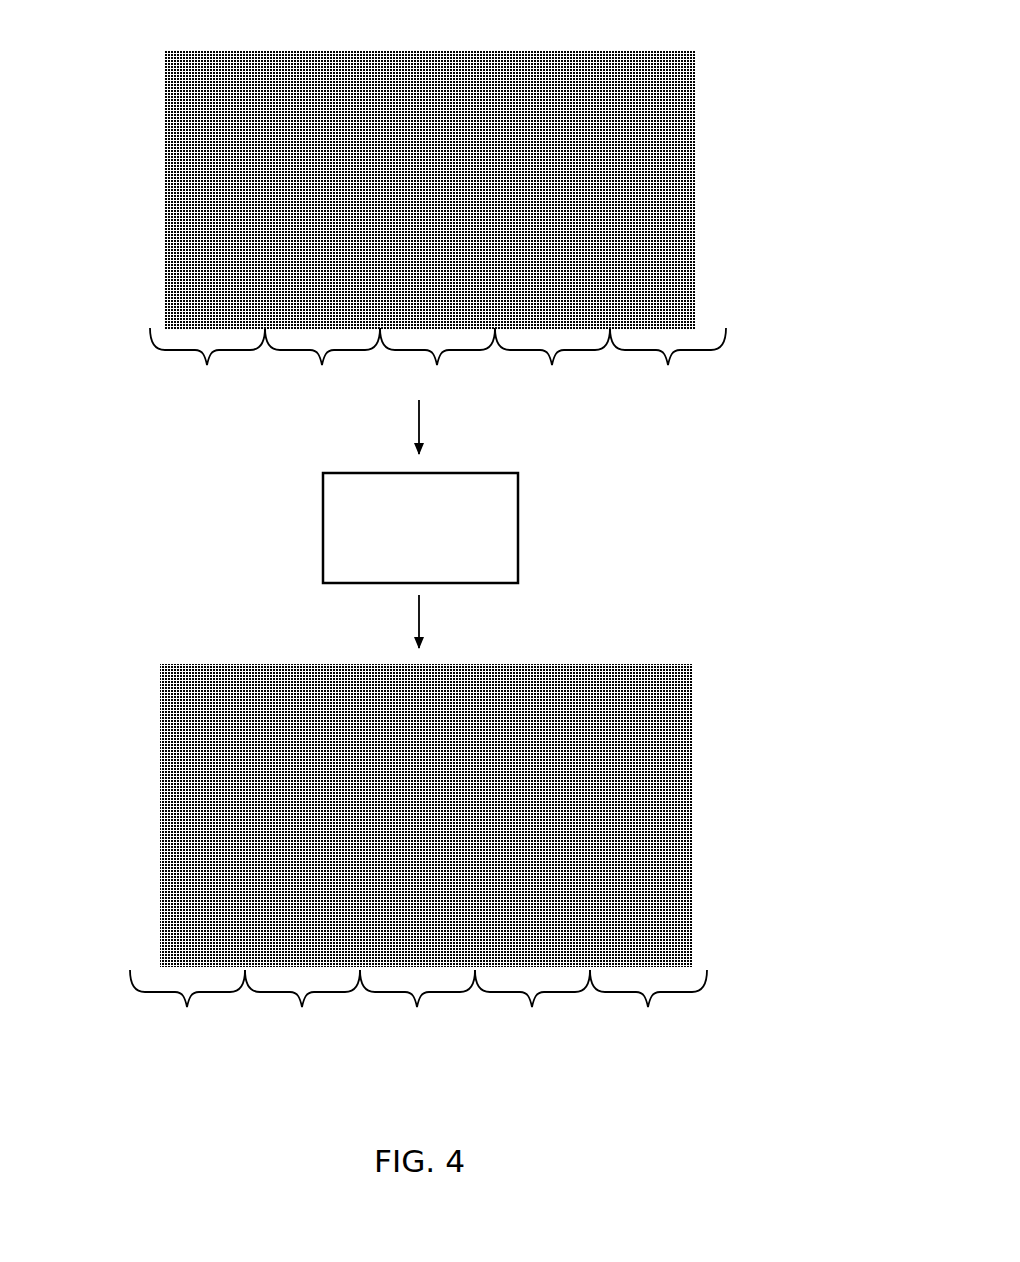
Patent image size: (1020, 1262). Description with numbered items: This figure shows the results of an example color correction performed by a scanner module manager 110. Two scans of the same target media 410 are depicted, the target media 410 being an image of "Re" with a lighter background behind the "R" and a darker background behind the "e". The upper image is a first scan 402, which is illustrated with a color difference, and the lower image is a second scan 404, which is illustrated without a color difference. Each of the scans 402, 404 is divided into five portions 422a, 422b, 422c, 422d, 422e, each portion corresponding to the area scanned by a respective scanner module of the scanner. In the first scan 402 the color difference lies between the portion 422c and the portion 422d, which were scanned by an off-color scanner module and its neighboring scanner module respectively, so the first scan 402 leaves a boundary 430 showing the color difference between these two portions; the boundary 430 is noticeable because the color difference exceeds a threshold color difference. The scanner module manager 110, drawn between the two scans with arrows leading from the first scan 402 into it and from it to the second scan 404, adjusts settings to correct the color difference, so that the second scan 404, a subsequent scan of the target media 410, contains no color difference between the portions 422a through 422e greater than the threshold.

The scanner module manager 110 is at (477, 473).
The first scan 402 is at (497, 164).
The second scan 404 is at (692, 853).
The target media 410 is at (206, 107).
The boundary 430 is at (504, 58).
The portion 422a is at (197, 688).
The portion 422b is at (312, 688).
The portion 422c is at (427, 688).
The portion 422d is at (542, 688).
The portion 422e is at (658, 688).